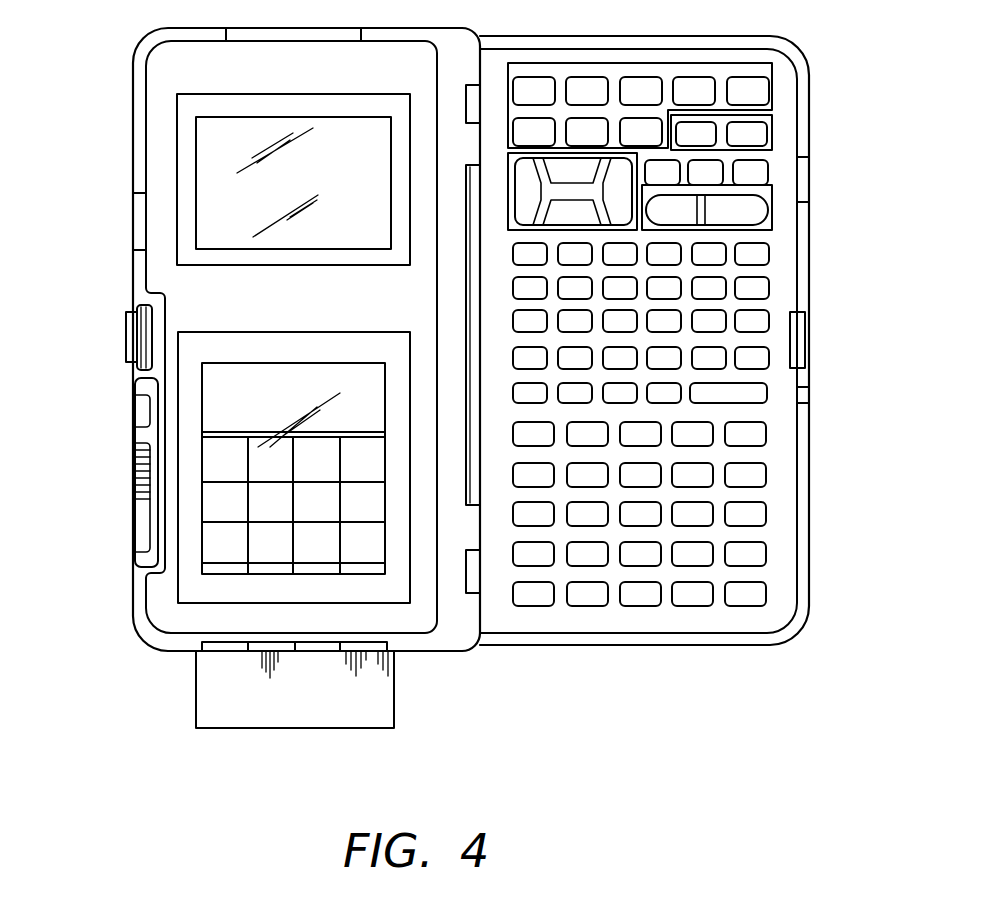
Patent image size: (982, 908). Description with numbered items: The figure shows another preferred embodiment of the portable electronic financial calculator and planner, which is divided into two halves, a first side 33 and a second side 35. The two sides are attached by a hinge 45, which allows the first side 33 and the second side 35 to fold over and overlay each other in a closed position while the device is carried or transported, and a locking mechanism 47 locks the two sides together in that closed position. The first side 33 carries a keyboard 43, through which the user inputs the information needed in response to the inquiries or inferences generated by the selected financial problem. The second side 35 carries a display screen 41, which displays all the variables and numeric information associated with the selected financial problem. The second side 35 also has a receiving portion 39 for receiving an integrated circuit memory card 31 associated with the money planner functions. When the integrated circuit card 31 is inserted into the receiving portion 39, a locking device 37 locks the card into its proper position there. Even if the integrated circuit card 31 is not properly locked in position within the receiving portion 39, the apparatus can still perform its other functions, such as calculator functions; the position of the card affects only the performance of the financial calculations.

The integrated circuit memory card 31 is at (338, 728).
The first side 33 is at (731, 636).
The second side 35 is at (137, 628).
The locking device 37 is at (135, 510).
The receiving portion 39 is at (298, 363).
The display screen 41 is at (215, 172).
The keyboard 43 is at (765, 289).
The hinge 45 is at (478, 92).
The locking mechanism 47 is at (126, 350).